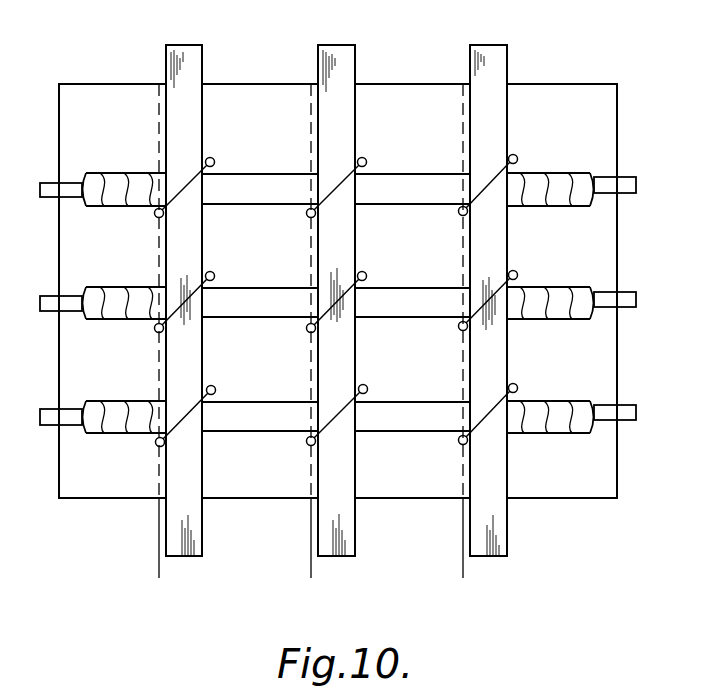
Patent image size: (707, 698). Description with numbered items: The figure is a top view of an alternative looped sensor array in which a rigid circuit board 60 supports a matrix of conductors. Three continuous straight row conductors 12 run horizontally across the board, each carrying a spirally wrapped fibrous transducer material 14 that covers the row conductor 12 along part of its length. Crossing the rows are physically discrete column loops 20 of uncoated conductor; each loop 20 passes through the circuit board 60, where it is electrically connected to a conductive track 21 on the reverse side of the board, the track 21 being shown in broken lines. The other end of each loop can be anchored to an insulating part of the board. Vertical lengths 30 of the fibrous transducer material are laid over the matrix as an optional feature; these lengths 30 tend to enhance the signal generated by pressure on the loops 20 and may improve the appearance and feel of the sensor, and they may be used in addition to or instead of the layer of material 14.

The row conductor 12 is at (50, 300).
The fibrous transducer material 14 is at (100, 300).
The column loop 20 is at (190, 177).
The conductive track 21 is at (159, 572).
The length of fibrous transducer material 30 is at (197, 66).
The rigid circuit board 60 is at (602, 119).